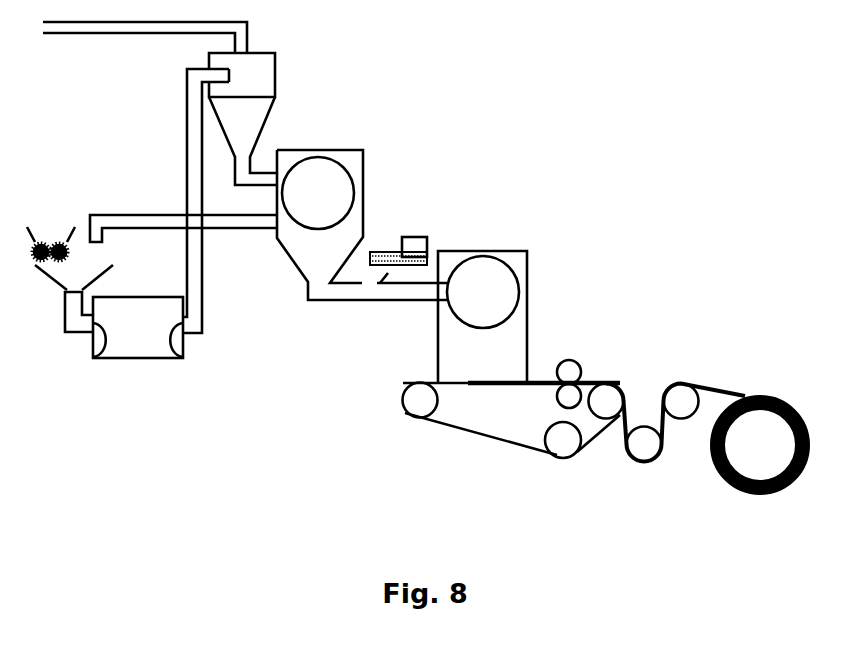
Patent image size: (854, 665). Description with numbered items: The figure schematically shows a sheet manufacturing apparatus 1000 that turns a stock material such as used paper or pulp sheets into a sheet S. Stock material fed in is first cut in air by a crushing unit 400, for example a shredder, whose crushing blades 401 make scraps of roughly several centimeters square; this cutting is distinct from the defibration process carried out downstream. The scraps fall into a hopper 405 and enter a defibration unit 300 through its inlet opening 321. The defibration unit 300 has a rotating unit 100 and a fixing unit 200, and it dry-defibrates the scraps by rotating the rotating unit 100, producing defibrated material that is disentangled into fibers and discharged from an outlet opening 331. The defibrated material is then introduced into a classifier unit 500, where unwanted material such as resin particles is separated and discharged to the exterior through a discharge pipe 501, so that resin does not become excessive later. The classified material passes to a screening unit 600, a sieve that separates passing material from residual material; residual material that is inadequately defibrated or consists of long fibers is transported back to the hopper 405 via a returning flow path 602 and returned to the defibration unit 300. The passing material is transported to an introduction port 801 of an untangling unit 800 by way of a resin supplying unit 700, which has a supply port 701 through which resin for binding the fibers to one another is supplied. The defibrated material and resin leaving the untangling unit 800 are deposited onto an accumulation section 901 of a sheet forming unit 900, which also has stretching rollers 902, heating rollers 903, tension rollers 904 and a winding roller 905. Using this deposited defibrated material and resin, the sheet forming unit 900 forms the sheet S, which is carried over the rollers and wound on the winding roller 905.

The sheet manufacturing apparatus 1000 is at (637, 70).
The rotating unit 100 is at (138, 361).
The fixing unit 200 is at (143, 348).
The defibration unit 300 is at (208, 386).
The inlet opening 321 is at (96, 359).
The outlet opening 331 is at (176, 359).
The crushing unit 400 is at (80, 195).
The crushing blades 401 is at (42, 243).
The hopper 405 is at (48, 278).
The classifier unit 500 is at (293, 75).
The discharge pipe 501 is at (110, 27).
The screening unit 600 is at (333, 186).
The returning flow path 602 is at (237, 223).
The resin supplying unit 700 is at (417, 248).
The supply port 701 is at (358, 270).
The untangling unit 800 is at (537, 230).
The introduction port 801 is at (452, 293).
The sheet forming unit 900 is at (700, 362).
The accumulation section 901 is at (462, 388).
The stretching rollers 902 is at (414, 405).
The heating rollers 903 is at (570, 375).
The tension rollers 904 is at (674, 400).
The winding roller 905 is at (750, 455).
The sheet S is at (590, 384).